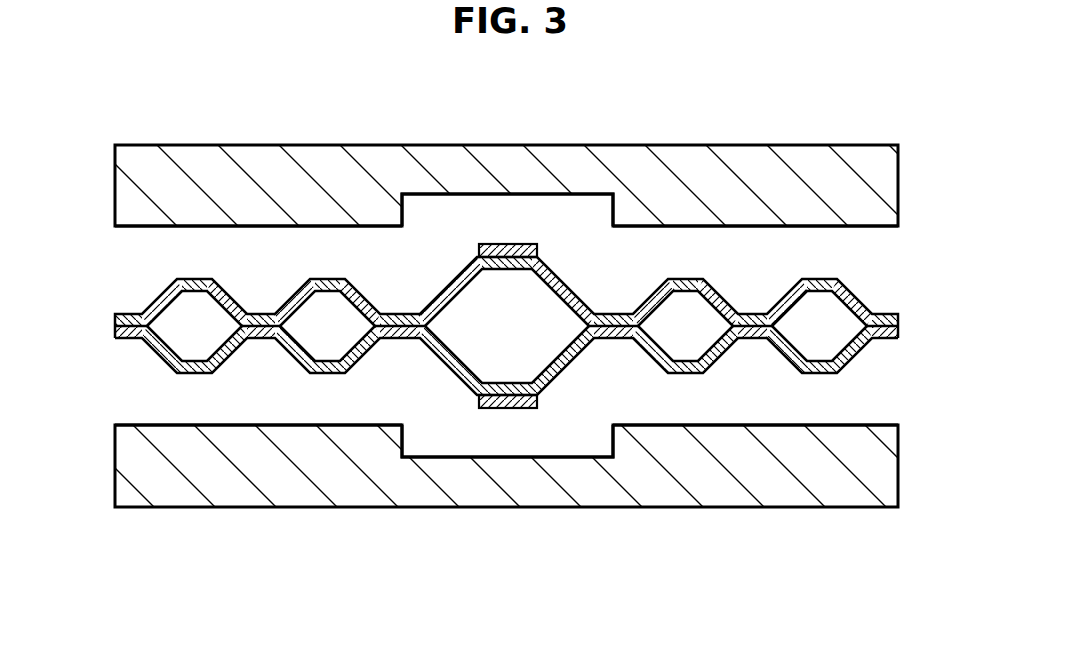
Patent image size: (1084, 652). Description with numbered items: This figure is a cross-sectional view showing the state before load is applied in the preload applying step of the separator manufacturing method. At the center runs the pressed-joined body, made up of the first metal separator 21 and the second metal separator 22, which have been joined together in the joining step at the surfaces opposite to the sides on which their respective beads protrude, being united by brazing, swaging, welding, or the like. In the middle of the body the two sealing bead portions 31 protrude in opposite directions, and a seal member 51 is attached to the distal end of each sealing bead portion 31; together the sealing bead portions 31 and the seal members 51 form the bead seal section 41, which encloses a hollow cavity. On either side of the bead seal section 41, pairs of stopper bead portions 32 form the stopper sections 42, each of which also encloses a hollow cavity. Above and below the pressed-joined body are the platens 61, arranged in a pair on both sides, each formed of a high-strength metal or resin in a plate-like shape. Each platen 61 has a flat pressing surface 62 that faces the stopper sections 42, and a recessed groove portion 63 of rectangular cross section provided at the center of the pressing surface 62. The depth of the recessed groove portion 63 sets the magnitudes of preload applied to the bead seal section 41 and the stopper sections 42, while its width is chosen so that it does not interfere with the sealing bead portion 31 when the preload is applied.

The first metal separator 21 is at (110, 278).
The second metal separator 22 is at (148, 354).
The sealing bead portion 31 is at (453, 275).
The stopper bead portion 32 is at (158, 293).
The bead seal section 41 is at (508, 326).
The stopper section 42 is at (186, 276).
The seal member 51 is at (541, 250).
The platen 61 is at (790, 104).
The pressing surface 62 is at (685, 226).
The recessed groove portion 63 is at (501, 194).